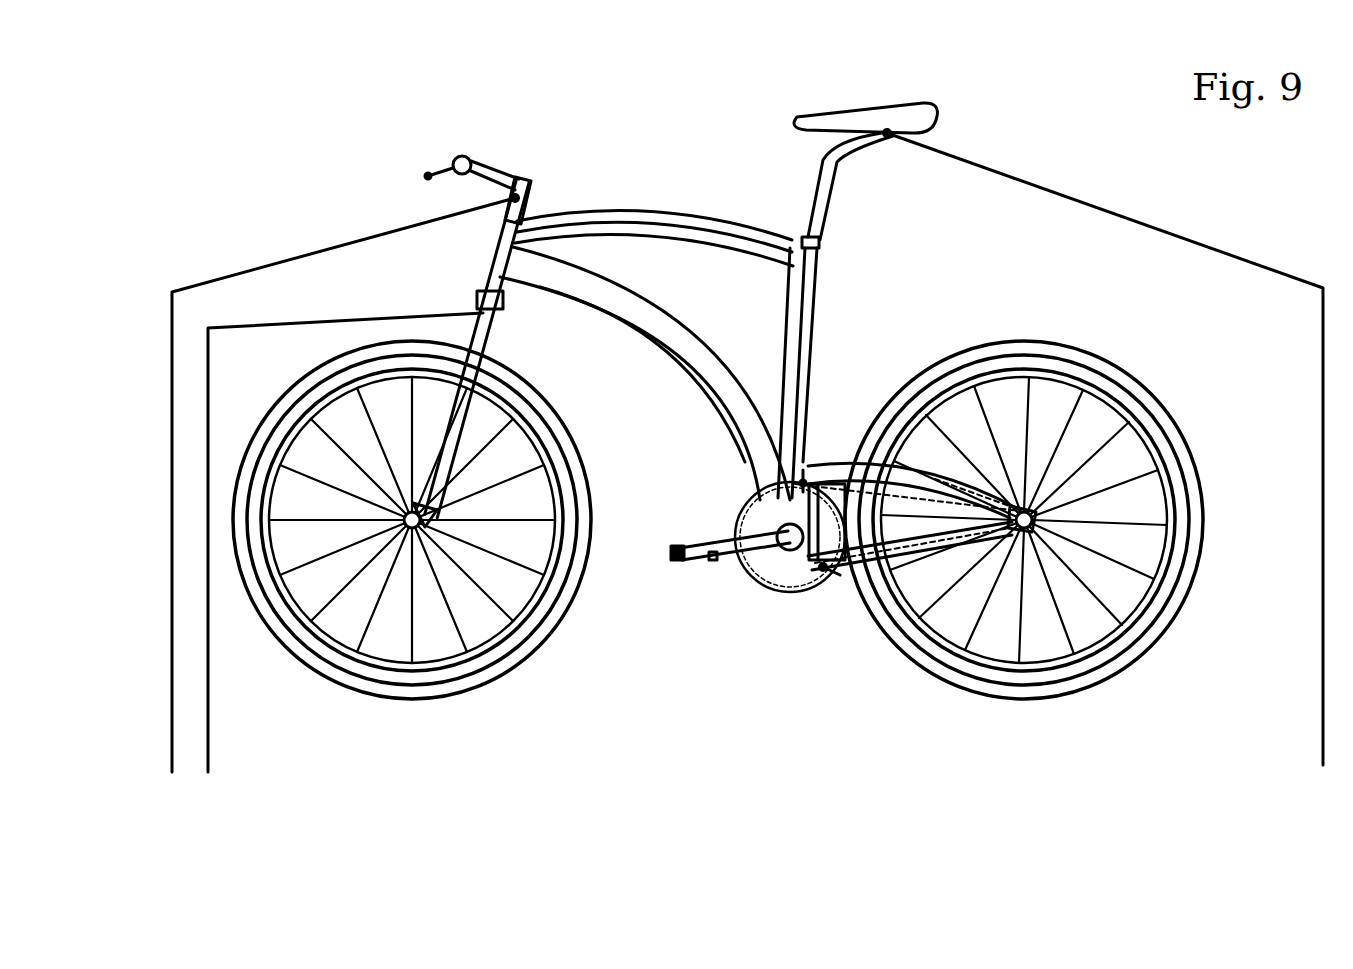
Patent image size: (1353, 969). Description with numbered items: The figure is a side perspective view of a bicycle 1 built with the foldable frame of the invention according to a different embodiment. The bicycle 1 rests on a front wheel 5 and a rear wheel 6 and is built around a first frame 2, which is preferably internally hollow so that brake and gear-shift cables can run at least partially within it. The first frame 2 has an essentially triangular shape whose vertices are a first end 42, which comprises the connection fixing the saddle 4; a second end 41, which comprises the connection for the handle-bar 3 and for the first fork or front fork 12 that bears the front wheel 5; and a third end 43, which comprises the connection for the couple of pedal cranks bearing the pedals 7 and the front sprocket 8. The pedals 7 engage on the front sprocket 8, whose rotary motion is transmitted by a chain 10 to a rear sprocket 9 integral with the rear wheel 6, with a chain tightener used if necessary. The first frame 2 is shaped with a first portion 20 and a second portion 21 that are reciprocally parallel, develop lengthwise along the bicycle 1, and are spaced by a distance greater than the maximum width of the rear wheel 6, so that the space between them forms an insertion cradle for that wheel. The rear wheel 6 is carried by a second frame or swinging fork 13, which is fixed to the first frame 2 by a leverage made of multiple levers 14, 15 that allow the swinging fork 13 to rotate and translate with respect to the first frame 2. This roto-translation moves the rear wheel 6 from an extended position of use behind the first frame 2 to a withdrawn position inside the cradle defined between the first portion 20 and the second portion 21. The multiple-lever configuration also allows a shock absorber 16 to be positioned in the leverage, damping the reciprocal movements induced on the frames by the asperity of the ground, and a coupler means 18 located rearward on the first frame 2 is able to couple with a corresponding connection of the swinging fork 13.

The bicycle 1 is at (746, 500).
The first frame 2 is at (646, 511).
The handle-bar 3 is at (341, 503).
The saddle 4 is at (1111, 466).
The front wheel 5 is at (340, 683).
The rear wheel 6 is at (1160, 635).
The pedals 7 is at (694, 678).
The front sprocket 8 is at (776, 577).
The rear sprocket 9 is at (1043, 521).
The chain 10 is at (837, 583).
The front fork 12 is at (341, 562).
The swinging fork 13 is at (943, 483).
The lever 14 is at (805, 563).
The lever 15 is at (864, 563).
The shock absorber 16 is at (820, 537).
The coupler means 18 is at (803, 462).
The first portion 20 is at (657, 328).
The second portion 21 is at (680, 378).
The second end 41 is at (507, 247).
The first end 42 is at (826, 265).
The third end 43 is at (780, 516).